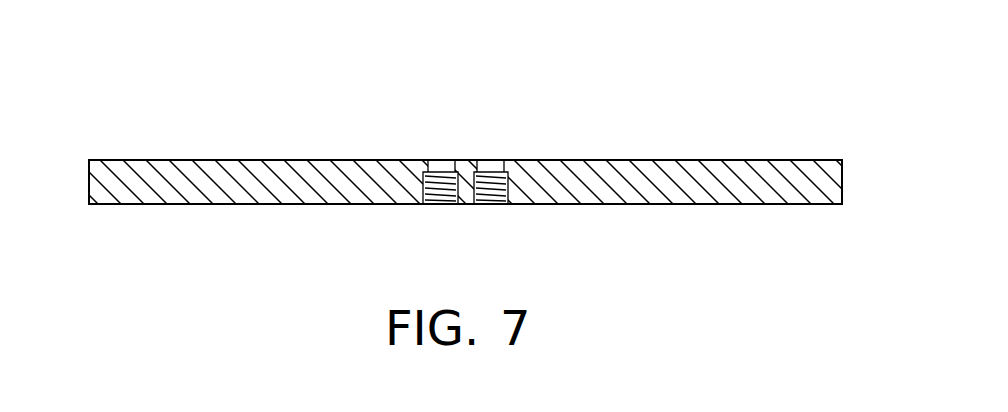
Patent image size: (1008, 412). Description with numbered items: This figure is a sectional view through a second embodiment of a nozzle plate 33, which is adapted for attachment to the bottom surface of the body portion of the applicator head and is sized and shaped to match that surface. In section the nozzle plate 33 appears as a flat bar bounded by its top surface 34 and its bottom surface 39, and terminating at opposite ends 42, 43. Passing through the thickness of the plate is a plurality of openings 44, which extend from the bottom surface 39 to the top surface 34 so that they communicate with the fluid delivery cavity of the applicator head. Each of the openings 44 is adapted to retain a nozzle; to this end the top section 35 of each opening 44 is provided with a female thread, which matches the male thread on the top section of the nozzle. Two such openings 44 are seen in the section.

The nozzle plate 33 is at (248, 95).
The top surface 34 is at (637, 160).
The top section 35 is at (432, 204).
The bottom surface 39 is at (618, 204).
The end 42 is at (88, 183).
The end 43 is at (842, 185).
The openings 44 is at (490, 166).